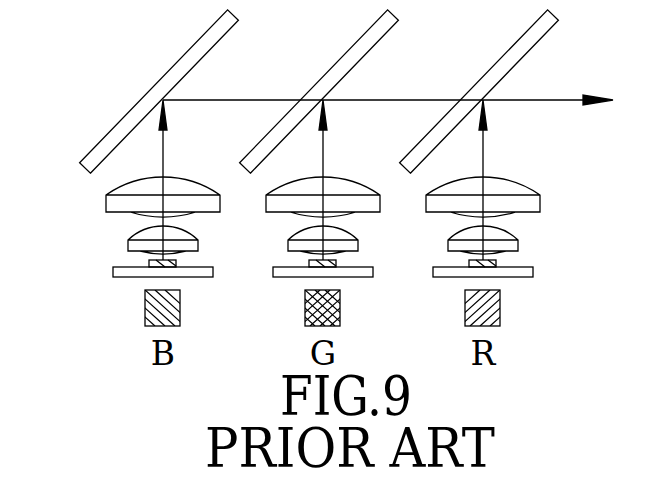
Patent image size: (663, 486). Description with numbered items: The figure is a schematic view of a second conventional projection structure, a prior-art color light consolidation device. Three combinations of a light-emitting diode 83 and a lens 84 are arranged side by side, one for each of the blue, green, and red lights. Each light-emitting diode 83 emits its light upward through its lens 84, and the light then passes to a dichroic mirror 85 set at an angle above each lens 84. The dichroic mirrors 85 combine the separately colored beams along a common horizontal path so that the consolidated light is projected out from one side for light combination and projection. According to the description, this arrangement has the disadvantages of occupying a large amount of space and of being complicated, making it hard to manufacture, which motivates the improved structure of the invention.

The dichroic mirror 85 is at (118, 132).
The lens 84 is at (83, 180).
The light-emitting diode 83 is at (113, 273).